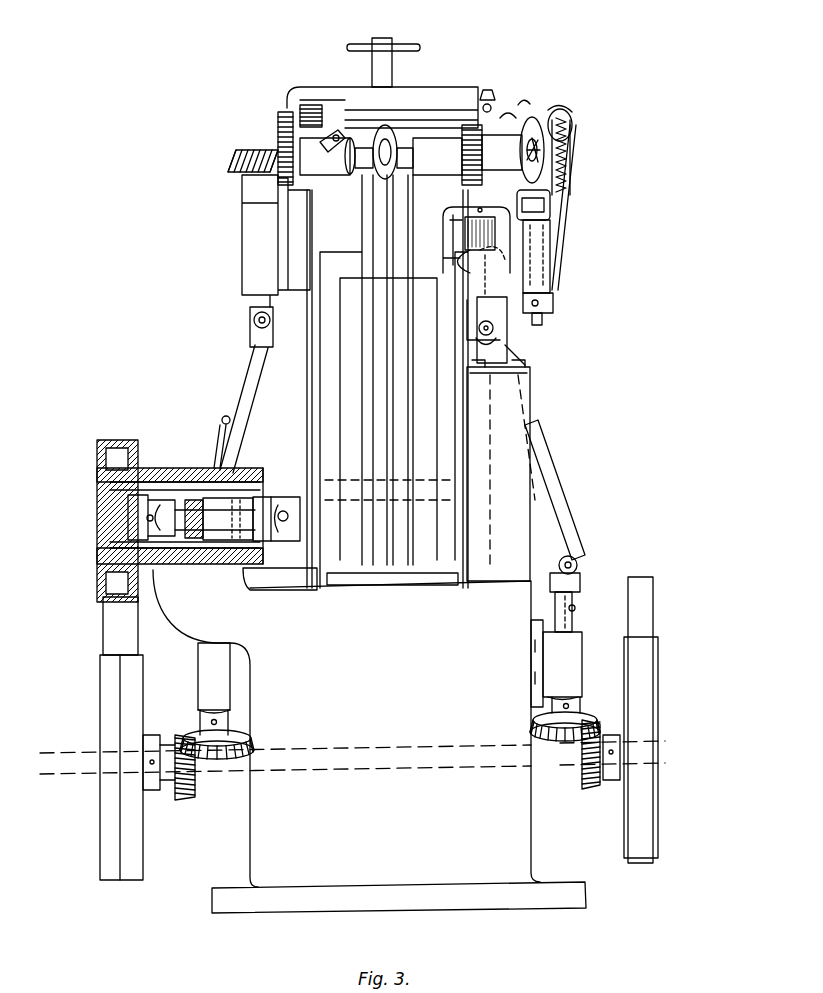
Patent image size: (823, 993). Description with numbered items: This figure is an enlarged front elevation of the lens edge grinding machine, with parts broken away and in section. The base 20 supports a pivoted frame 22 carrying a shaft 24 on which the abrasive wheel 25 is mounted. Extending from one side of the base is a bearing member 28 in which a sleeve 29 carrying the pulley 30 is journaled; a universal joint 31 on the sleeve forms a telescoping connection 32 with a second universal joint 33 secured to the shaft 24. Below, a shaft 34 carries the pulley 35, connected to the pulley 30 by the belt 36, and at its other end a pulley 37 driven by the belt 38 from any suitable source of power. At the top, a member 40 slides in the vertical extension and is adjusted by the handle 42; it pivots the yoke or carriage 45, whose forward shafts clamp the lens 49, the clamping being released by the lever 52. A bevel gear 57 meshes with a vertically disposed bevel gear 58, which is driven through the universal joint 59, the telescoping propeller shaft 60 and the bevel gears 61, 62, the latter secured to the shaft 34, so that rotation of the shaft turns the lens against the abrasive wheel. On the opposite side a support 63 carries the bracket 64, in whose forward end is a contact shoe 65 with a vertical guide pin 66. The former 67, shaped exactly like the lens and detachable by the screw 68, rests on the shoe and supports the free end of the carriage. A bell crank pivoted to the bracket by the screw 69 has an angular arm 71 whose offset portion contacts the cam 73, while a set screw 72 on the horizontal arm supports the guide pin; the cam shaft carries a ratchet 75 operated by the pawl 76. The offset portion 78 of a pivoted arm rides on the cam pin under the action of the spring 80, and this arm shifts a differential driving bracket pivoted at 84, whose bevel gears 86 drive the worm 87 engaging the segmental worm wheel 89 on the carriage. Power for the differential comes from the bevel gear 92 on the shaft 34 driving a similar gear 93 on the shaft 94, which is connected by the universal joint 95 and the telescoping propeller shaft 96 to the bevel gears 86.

The base 20 is at (352, 741).
The frame 22 is at (265, 338).
The shaft 24 is at (440, 497).
The abrasive wheel 25 is at (330, 370).
The bearing member 28 is at (165, 468).
The sleeve 29 is at (188, 486).
The pulley 30 is at (100, 457).
The universal joint 31 is at (128, 518).
The telescoping connection 32 is at (245, 470).
The second universal joint 33 is at (283, 497).
The shaft 34 is at (95, 762).
The pulley 35 is at (100, 664).
The belt 36 is at (103, 622).
The pulley 37 is at (660, 652).
The belt 38 is at (655, 600).
The member 40 is at (420, 118).
The handle 42 is at (395, 43).
The yoke or carriage 45 is at (510, 110).
The lens 49 is at (378, 170).
The lever 52 is at (338, 130).
The bevel gear 57 is at (278, 120).
The bevel gear 58 is at (228, 172).
The universal joint 59 is at (254, 320).
The telescoping propeller shaft 60 is at (225, 418).
The bevel gear 61 is at (216, 760).
The bevel gear 62 is at (188, 800).
The support 63 is at (520, 390).
The bracket 64 is at (505, 345).
The contact shoe 65 is at (550, 196).
The vertical guide pin 66 is at (550, 282).
The former 67 is at (570, 175).
The screw 68 is at (568, 158).
The screw 69 is at (553, 300).
The arm 71 is at (565, 222).
The set screw 72 is at (575, 128).
The cam 73 is at (540, 150).
The ratchet 75 is at (572, 112).
The pawl 76 is at (525, 100).
The offset portion 78 is at (570, 112).
The spring 80 is at (535, 155).
The pivot 84 is at (455, 237).
The bevel gears 86 is at (475, 217).
The worm 87 is at (500, 115).
The segmental worm wheel 89 is at (490, 100).
The bevel gear 92 is at (590, 785).
The bevel gear 93 is at (570, 735).
The shaft 94 is at (575, 600).
The universal joint 95 is at (578, 558).
The telescoping propeller shaft 96 is at (535, 430).